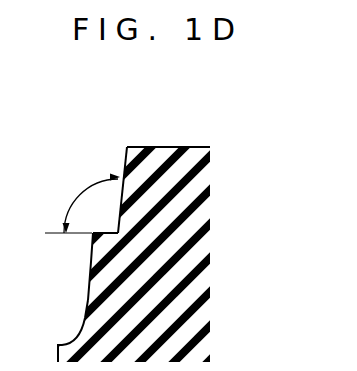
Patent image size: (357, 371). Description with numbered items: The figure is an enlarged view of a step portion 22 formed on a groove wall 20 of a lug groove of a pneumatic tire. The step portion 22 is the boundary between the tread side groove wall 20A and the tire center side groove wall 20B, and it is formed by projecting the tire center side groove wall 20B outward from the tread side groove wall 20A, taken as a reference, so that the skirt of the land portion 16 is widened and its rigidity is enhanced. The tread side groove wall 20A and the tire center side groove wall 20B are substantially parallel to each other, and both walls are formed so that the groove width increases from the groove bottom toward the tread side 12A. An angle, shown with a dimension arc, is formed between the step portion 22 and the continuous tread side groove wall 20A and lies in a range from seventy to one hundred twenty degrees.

The tread side 12A is at (166, 147).
The land portion 16 is at (194, 147).
The tread side groove wall 20A is at (127, 160).
The groove wall 20 is at (91, 260).
The tire center side groove wall 20B is at (87, 300).
The step portion 22 is at (117, 232).